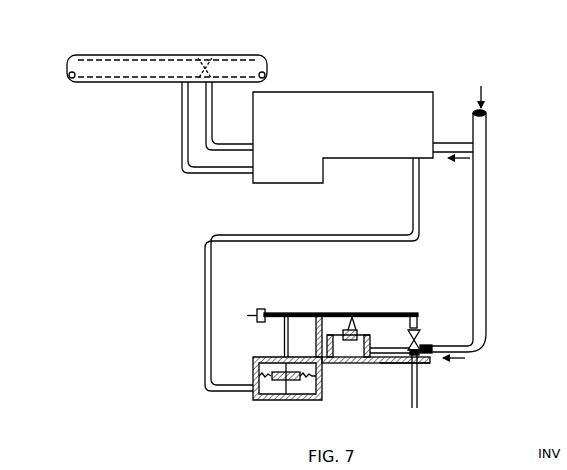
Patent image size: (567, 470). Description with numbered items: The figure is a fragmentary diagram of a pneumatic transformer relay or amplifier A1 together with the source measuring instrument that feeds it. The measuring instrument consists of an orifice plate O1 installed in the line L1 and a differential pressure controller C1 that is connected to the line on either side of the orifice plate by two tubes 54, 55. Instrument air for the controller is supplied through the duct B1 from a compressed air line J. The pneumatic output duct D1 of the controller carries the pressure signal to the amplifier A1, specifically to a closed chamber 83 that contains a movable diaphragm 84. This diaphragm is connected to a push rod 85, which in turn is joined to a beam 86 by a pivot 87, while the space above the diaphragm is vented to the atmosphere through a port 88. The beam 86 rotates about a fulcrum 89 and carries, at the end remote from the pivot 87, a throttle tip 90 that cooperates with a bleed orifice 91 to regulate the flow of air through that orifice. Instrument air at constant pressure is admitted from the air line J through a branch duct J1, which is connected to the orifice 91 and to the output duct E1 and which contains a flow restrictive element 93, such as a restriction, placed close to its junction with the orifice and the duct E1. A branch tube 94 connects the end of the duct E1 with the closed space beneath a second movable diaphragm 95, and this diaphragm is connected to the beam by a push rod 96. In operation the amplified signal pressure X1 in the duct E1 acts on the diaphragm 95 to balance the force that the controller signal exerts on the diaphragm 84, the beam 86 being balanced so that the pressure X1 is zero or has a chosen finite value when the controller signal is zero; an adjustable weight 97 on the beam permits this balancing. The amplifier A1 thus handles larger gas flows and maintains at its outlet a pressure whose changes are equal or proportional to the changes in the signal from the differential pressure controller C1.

The line L1 is at (129, 56).
The orifice plate O1 is at (207, 58).
The tube 54 is at (181, 101).
The tube 55 is at (213, 101).
The differential pressure controller C1 is at (365, 92).
The duct B1 is at (461, 143).
The compressed air line J is at (487, 126).
The branch duct J1 is at (470, 345).
The pneumatic output duct D1 is at (413, 197).
The amplified signal pressure X1 is at (321, 298).
The amplifier A1 is at (381, 298).
The closed chamber 83 is at (308, 398).
The movable diaphragm 84 is at (284, 397).
The push rod 85 is at (283, 343).
The beam 86 is at (340, 312).
The pivot 87 is at (287, 312).
The port 88 is at (312, 364).
The fulcrum 89 is at (317, 312).
The throttle tip 90 is at (412, 316).
The bleed orifice 91 is at (420, 334).
The flow restrictive element 93 is at (432, 356).
The branch tube 94 is at (398, 363).
The movable diaphragm 95 is at (362, 339).
The push rod 96 is at (356, 328).
The adjustable weight 97 is at (260, 309).
The output duct E1 is at (417, 401).